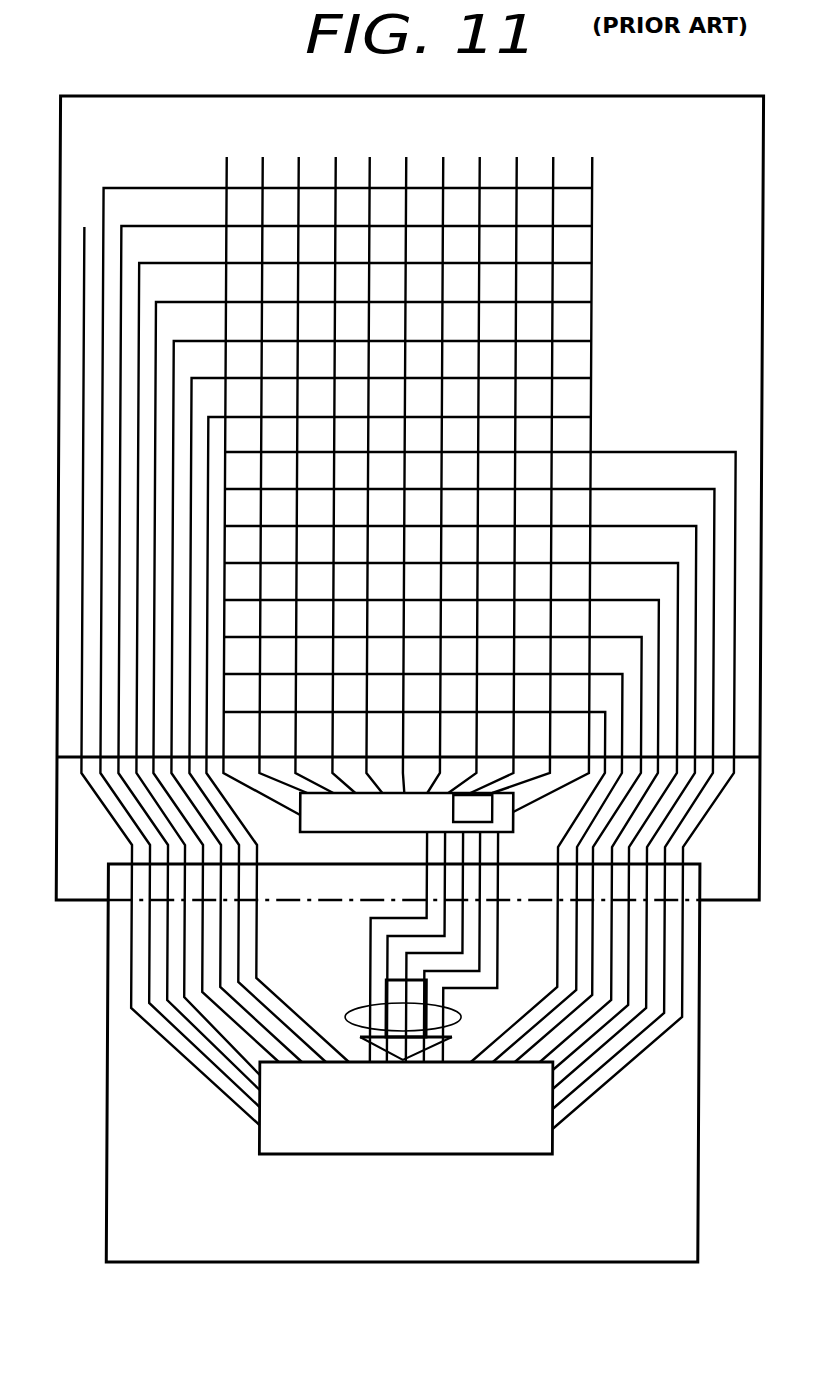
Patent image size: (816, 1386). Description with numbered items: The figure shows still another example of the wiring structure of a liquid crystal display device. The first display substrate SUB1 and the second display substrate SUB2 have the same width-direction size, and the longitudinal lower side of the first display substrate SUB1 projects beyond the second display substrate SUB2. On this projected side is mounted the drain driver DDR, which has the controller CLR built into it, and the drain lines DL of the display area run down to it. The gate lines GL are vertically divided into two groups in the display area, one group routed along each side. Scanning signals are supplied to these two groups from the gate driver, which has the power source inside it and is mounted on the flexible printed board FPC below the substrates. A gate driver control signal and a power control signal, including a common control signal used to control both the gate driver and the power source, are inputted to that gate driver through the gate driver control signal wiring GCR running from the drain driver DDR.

The first display substrate SUB1 is at (77, 896).
The second display substrate SUB2 is at (751, 159).
The gate line GL is at (156, 187).
The drain line DL is at (261, 163).
The drain driver DDR is at (406, 812).
The controller CLR is at (495, 817).
The gate driver control signal wiring GCR is at (393, 1005).
The flexible printed board FPC is at (257, 1212).